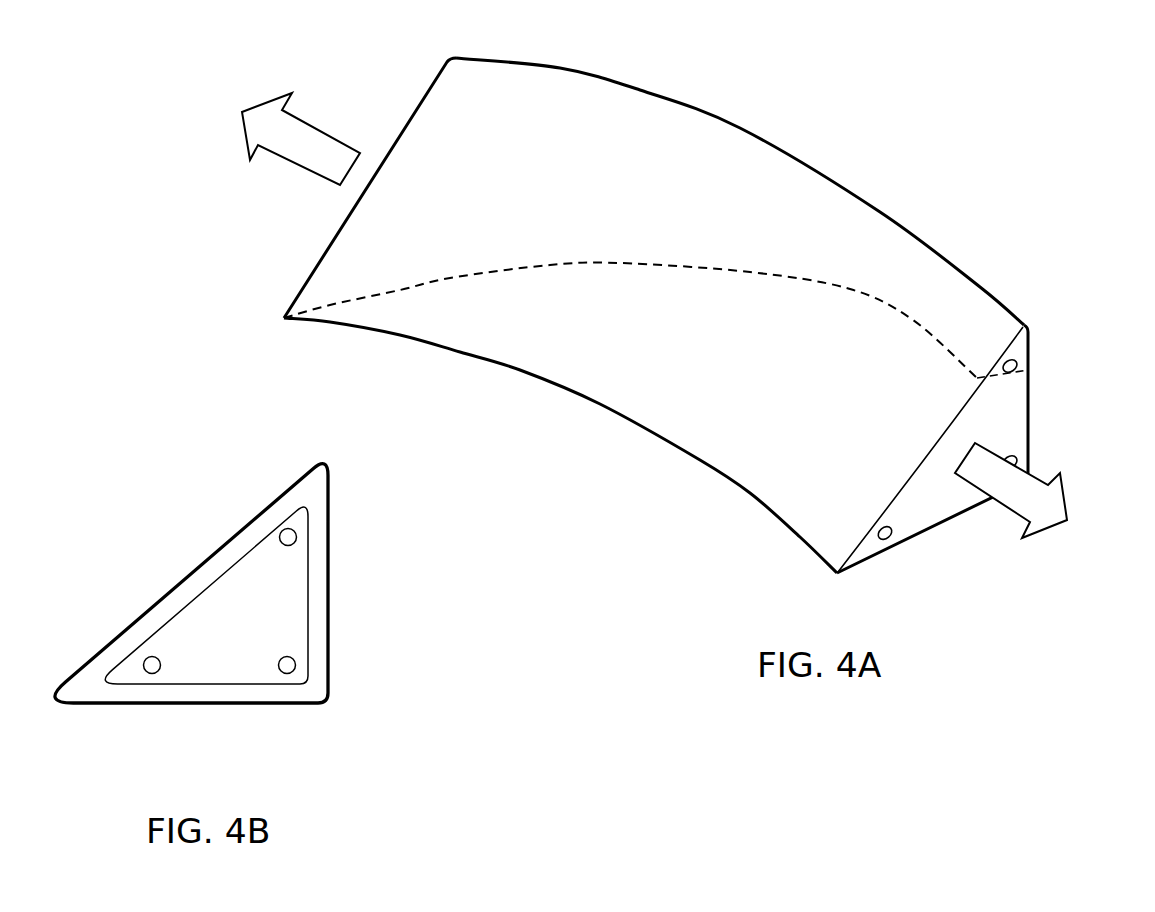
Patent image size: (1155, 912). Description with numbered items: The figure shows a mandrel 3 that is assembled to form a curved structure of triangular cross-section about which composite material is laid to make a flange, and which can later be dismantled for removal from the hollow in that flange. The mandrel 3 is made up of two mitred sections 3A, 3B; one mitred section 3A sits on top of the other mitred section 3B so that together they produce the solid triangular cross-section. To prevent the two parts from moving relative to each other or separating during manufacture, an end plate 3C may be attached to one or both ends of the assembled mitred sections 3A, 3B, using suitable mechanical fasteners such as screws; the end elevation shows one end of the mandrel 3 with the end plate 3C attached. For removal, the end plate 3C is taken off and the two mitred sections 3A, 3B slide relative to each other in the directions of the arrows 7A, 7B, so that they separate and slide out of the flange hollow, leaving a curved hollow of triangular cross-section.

In FIG. 4A, the mandrel 3 is at (656, 301).
In FIG. 4B, the mandrel 3 is at (229, 574).
In FIG. 4A, the mitred section 3A is at (848, 213).
In FIG. 4A, the mitred section 3B is at (755, 473).
In FIG. 4B, the end plate 3C is at (289, 604).
In FIG. 4A, the arrow 7A is at (1036, 490).
In FIG. 4A, the arrow 7B is at (283, 130).